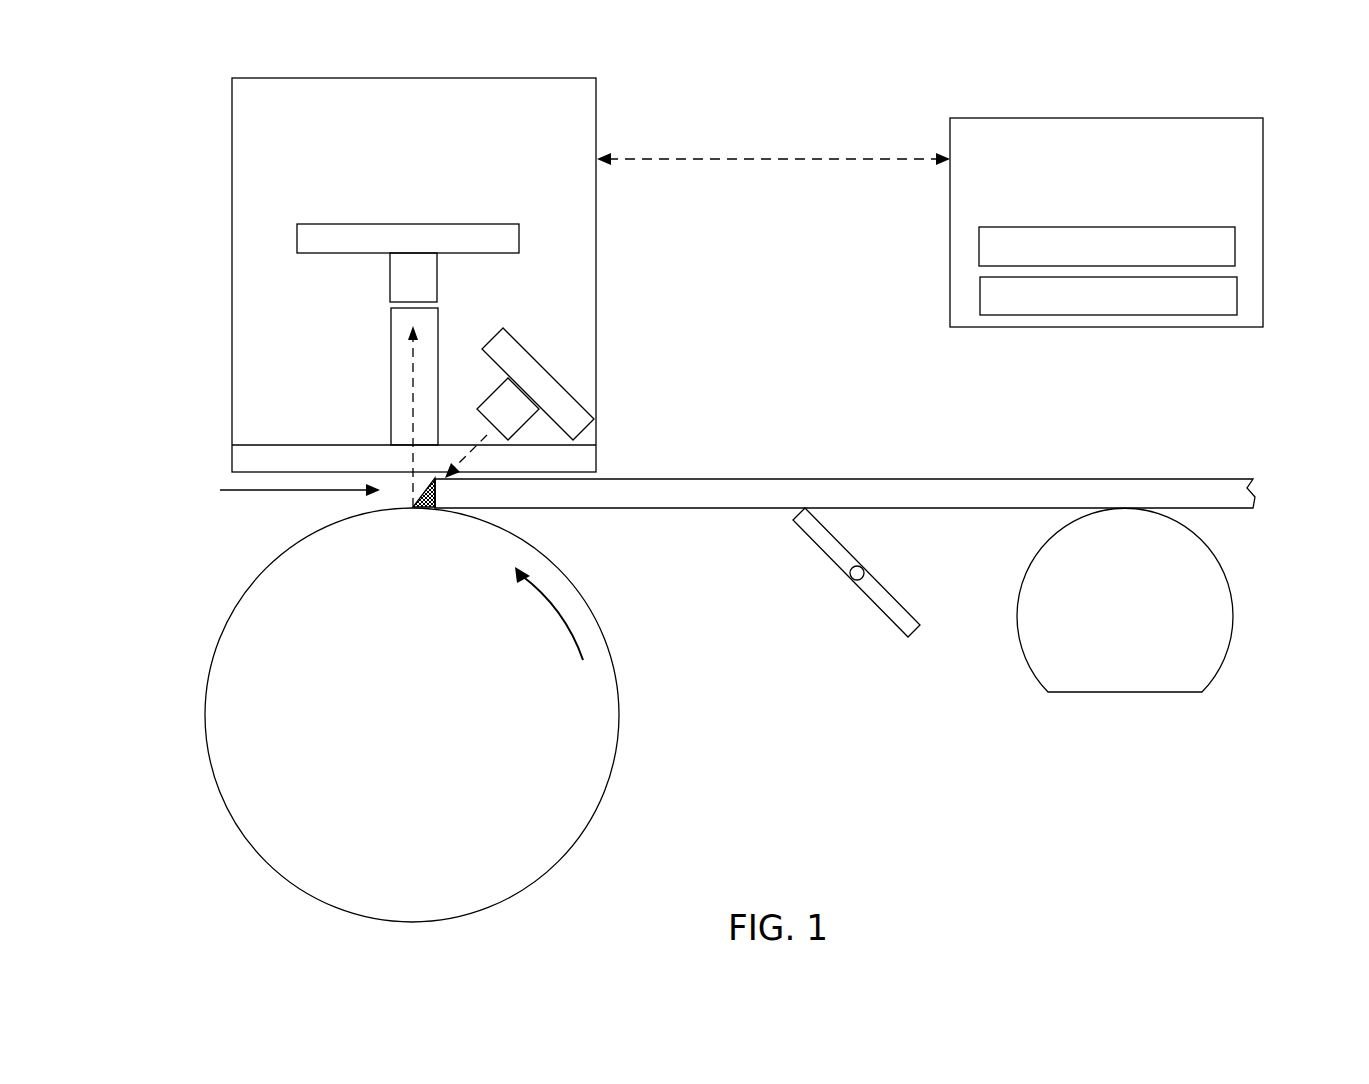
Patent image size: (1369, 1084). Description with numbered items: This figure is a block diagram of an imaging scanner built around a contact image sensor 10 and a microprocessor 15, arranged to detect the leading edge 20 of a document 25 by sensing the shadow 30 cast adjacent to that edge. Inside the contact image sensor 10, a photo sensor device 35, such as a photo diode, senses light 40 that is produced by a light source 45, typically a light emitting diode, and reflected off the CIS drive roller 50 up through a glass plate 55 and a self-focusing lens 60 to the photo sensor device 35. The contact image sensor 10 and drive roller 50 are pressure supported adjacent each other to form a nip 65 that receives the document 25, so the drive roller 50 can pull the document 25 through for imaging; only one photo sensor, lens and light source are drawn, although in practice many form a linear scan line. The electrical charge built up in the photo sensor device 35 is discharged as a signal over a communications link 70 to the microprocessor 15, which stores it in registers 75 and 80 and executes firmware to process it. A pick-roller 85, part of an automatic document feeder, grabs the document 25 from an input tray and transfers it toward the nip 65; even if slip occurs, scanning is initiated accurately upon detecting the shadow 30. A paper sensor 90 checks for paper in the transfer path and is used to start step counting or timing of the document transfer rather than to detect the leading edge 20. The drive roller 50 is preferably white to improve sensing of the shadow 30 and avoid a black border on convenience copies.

The contact image sensor 10 is at (232, 148).
The microprocessor 15 is at (1262, 193).
The leading edge 20 is at (447, 495).
The document 25 is at (903, 479).
The shadow 30 is at (400, 500).
The photo sensor device 35 is at (297, 232).
The light 40 is at (405, 383).
The light source 45 is at (545, 368).
The CIS drive roller 50 is at (608, 667).
The glass plate 55 is at (232, 457).
The self-focusing lens 60 is at (391, 335).
The nip 65 is at (280, 490).
The communications link 70 is at (808, 157).
The register 75 is at (1235, 247).
The register 80 is at (1237, 297).
The pick-roller 85 is at (1232, 590).
The paper sensor 90 is at (885, 590).